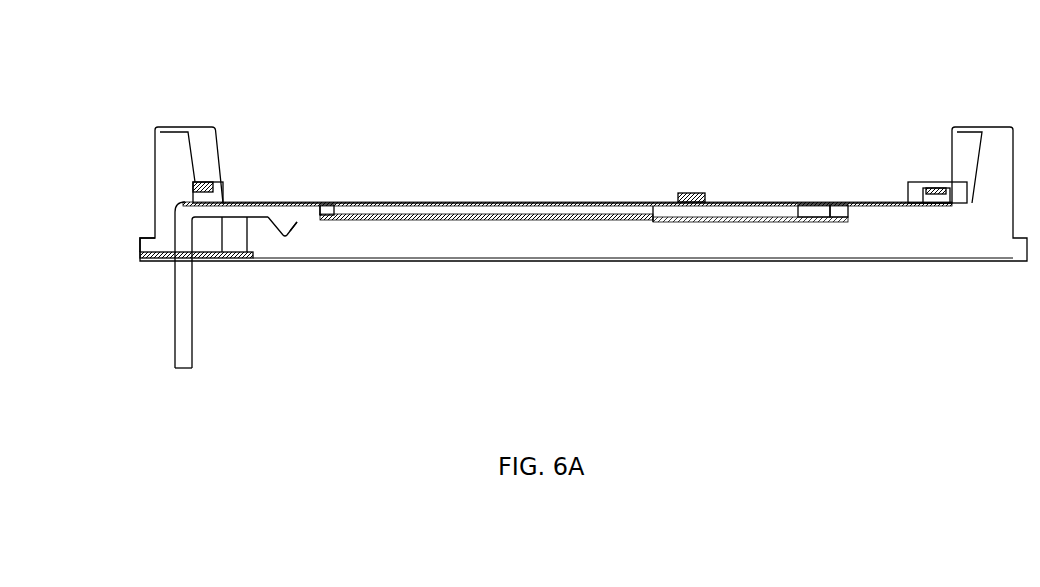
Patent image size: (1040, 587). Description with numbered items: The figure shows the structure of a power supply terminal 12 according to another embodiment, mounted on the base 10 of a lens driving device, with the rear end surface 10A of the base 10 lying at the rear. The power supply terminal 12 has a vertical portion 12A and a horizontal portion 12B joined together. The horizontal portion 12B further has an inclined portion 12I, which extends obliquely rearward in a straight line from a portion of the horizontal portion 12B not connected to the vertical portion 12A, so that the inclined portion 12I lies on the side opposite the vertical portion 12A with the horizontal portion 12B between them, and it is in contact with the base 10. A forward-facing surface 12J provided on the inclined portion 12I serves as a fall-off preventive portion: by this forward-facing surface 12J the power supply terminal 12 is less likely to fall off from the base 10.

The base 10 is at (469, 240).
The rear end surface 10A is at (160, 255).
The power supply terminal 12 is at (515, 246).
The vertical portion 12A is at (183, 338).
The horizontal portion 12B is at (230, 207).
The inclined portion 12I is at (287, 216).
The forward-facing surface 12J is at (297, 223).